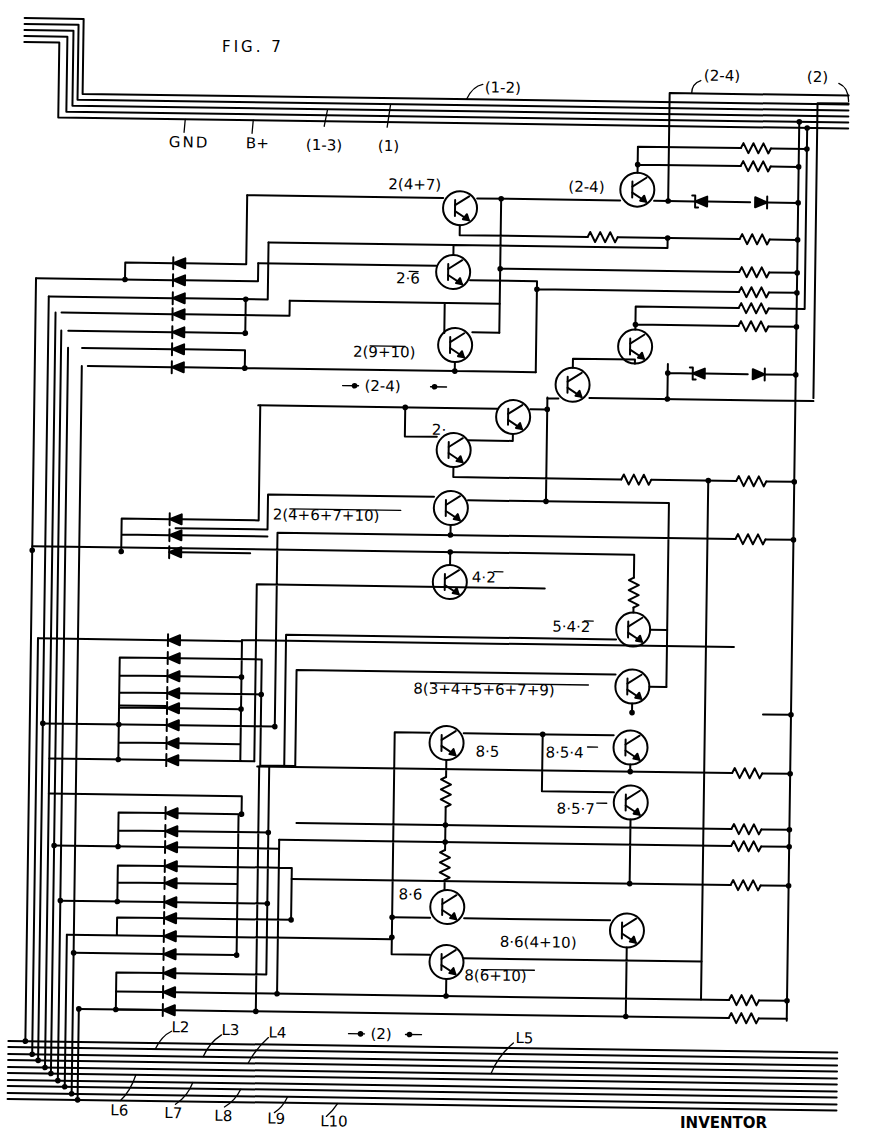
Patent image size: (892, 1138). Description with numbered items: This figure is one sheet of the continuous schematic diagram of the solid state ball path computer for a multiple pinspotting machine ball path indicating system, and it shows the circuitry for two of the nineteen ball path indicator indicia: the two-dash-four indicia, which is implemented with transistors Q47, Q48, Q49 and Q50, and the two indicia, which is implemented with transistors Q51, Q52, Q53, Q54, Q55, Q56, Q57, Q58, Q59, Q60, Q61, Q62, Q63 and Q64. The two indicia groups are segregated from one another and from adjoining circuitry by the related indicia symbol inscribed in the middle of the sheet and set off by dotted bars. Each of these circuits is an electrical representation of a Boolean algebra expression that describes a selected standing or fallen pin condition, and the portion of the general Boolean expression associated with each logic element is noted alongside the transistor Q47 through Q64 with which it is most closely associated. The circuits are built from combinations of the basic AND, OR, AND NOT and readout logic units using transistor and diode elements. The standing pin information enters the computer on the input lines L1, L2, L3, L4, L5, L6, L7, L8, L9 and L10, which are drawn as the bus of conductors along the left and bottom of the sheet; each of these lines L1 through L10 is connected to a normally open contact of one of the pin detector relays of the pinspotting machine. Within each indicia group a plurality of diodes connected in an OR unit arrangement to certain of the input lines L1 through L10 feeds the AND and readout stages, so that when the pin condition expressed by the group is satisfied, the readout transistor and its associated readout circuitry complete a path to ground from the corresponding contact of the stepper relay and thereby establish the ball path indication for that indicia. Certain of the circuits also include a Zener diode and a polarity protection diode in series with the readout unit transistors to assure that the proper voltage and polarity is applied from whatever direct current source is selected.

The transistor Q47 is at (651, 198).
The transistor Q48 is at (437, 208).
The transistor Q49 is at (470, 280).
The transistor Q50 is at (472, 345).
The transistor Q51 is at (524, 426).
The transistor Q52 is at (623, 343).
The transistor Q53 is at (428, 451).
The transistor Q54 is at (586, 393).
The transistor Q55 is at (467, 509).
The transistor Q56 is at (462, 589).
The transistor Q57 is at (617, 638).
The transistor Q58 is at (649, 686).
The transistor Q59 is at (432, 747).
The transistor Q60 is at (648, 747).
The transistor Q61 is at (648, 802).
The transistor Q62 is at (463, 905).
The transistor Q63 is at (422, 962).
The transistor Q64 is at (645, 930).
The input line L1 is at (112, 1047).
The input line L2 is at (38, 582).
The input line L3 is at (39, 697).
The input line L4 is at (45, 762).
The input line L5 is at (52, 800).
The input line L6 is at (58, 829).
The input line L7 is at (65, 880).
The input line L8 is at (72, 935).
The input line L9 is at (88, 440).
The input line L10 is at (88, 408).